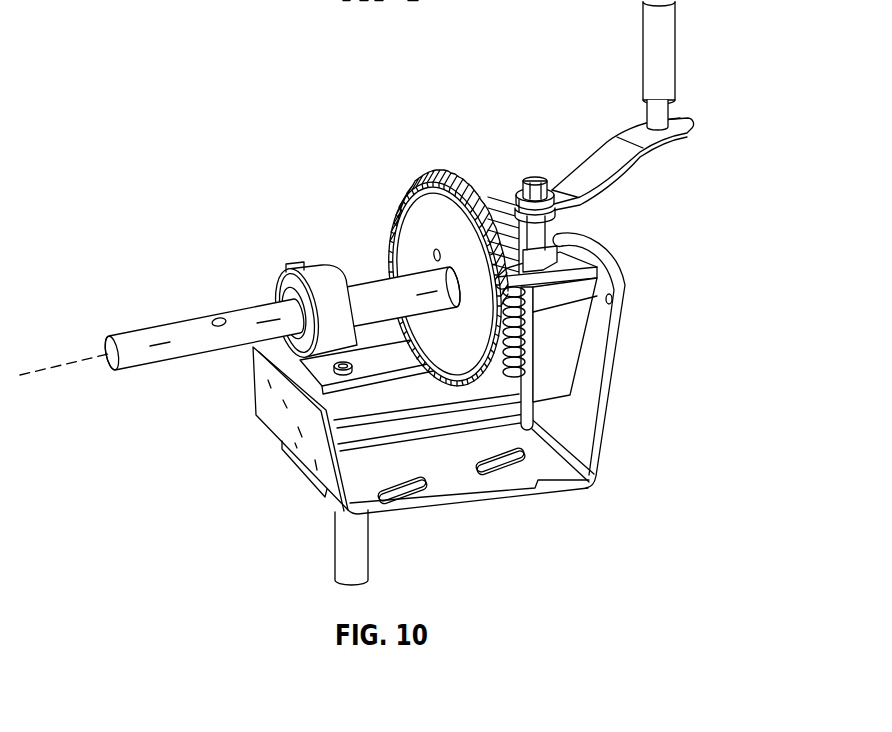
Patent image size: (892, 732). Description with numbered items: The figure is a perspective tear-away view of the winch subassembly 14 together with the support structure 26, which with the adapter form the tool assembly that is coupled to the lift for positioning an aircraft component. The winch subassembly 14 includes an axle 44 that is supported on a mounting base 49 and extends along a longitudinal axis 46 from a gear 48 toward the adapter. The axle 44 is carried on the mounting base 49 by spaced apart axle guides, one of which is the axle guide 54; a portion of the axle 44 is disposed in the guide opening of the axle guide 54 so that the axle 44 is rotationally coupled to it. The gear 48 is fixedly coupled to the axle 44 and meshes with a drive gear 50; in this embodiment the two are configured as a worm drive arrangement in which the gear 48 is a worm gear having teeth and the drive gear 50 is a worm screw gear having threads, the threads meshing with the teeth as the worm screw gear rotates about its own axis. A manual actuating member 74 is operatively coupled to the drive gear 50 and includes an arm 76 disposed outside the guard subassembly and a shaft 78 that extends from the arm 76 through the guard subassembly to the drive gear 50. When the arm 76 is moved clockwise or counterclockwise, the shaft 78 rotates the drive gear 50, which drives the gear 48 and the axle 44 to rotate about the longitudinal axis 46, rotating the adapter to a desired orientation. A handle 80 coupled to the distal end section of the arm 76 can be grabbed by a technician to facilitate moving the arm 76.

The winch subassembly 14 is at (598, 365).
The support structure 26 is at (347, 537).
The axle 44 is at (373, 293).
The longitudinal axis 46 is at (63, 360).
The gear 48 is at (432, 218).
The mounting base 49 is at (453, 487).
The drive gear 50 is at (614, 300).
The axle guide 54 is at (313, 277).
The manual actuating member 74 is at (672, 128).
The arm 76 is at (598, 162).
The shaft 78 is at (570, 233).
The handle 80 is at (663, 62).